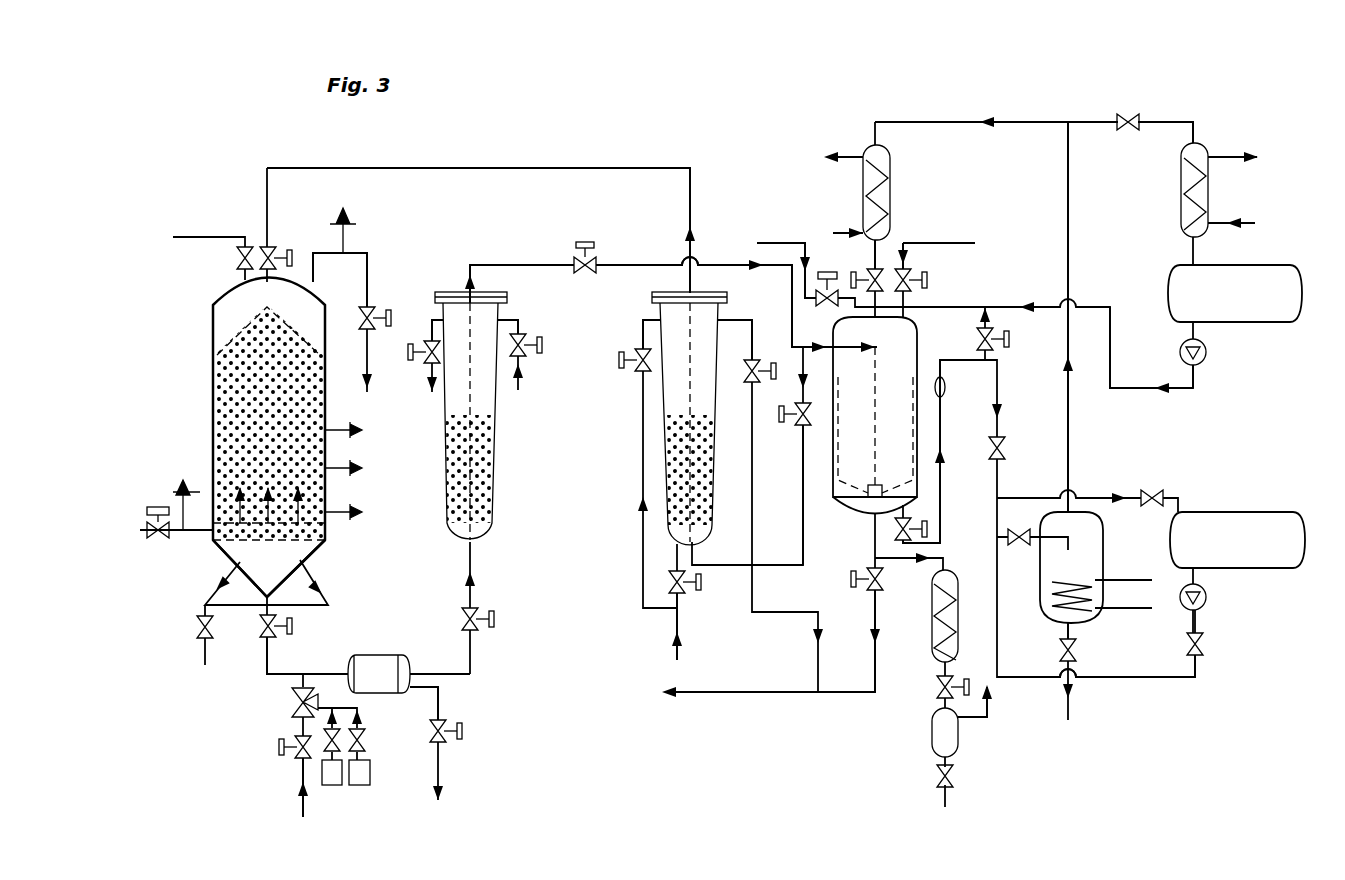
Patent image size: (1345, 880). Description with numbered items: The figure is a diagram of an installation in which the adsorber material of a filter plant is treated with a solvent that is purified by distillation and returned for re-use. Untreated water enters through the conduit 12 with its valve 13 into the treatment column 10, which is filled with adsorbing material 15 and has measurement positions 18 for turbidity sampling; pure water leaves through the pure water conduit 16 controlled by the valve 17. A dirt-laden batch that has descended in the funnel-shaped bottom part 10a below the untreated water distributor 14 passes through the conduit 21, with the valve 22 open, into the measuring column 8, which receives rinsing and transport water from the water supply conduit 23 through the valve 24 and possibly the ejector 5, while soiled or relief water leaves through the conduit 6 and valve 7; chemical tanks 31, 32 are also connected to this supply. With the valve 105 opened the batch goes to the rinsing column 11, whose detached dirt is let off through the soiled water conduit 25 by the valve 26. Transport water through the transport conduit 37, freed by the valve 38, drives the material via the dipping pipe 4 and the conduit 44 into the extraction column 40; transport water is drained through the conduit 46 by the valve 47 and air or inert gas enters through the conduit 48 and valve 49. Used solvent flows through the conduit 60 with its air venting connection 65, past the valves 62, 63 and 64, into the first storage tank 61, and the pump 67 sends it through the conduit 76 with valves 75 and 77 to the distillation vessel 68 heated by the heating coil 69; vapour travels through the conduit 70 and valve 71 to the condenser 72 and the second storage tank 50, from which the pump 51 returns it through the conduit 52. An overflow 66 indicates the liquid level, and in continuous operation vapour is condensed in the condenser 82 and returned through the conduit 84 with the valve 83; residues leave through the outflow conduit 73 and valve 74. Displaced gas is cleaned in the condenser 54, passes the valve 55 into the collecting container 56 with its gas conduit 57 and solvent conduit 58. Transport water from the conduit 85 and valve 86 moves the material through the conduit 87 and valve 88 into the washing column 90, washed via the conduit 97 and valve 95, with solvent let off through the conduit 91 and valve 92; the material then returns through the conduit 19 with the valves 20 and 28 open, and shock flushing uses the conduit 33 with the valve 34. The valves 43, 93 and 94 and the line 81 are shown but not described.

The dipping pipe 4 is at (468, 385).
The ejector 5 is at (300, 705).
The conduit 6 is at (462, 731).
The valve 7 is at (448, 705).
The intermediate container (measuring column) 8 is at (385, 660).
The treatment column 10 is at (210, 405).
The funnel-shaped bottom part 10a is at (298, 548).
The rinsing column 11 is at (502, 436).
The conduit 12 is at (205, 532).
The valve 13 is at (158, 505).
The untreated water distributor 14 is at (290, 540).
The adsorbing material 15 is at (215, 355).
The pure water conduit 16 is at (355, 253).
The valve 17 is at (372, 310).
The measurement positions (valves) 18 is at (363, 428).
The conduit 19 is at (462, 168).
The valve 20 is at (272, 250).
The conduit 21 is at (330, 674).
The valve 22 is at (272, 637).
The water supply conduit 23 is at (300, 808).
The valve 24 is at (277, 750).
The soiled water conduit 25 is at (430, 322).
The valve 26 is at (418, 358).
The valve 28 is at (207, 638).
The chemical tank 31 is at (333, 785).
The chemical tank 32 is at (360, 785).
The conduit 33 is at (207, 237).
The valve 34 is at (238, 258).
The transport conduit 37 is at (503, 322).
The valve 38 is at (543, 340).
The extraction column 40 is at (853, 522).
The control valve 43 is at (590, 247).
The conduit 44 is at (505, 265).
The conduit 46 is at (877, 665).
The valve 47 is at (848, 580).
The conduit 48 is at (935, 243).
The valve 49 is at (913, 275).
The second storage tank 50 is at (1240, 312).
The pump 51 is at (1206, 360).
The conduit 52 is at (1070, 362).
The condenser 54 is at (940, 600).
The valve 55 is at (936, 690).
The collecting container 56 is at (960, 740).
The conduit 57 is at (988, 717).
The conduit 58 is at (956, 772).
The conduit 60 is at (942, 500).
The first storage tank 61 is at (1226, 525).
The valve 62 is at (895, 530).
The valve 63 is at (1004, 448).
The valve 64 is at (1160, 493).
The air venting connection 65 is at (1010, 338).
The overflow 66 is at (946, 387).
The pump 67 is at (1207, 598).
The distillation vessel 68 is at (1103, 552).
The heating coil 69 is at (1132, 585).
The conduit 70 is at (1071, 438).
The valve 71 is at (1138, 122).
The condenser 72 is at (1210, 185).
The outflow conduit 73 is at (1072, 630).
The valve 74 is at (1077, 652).
The valve 75 is at (1205, 645).
The conduit 76 is at (1115, 678).
The valve 77 is at (1019, 545).
The line 81 is at (925, 122).
The condenser 82 is at (893, 190).
The valve 83 is at (872, 262).
The conduit 84 is at (881, 270).
The conduit 85 is at (770, 243).
The valve 86 is at (822, 272).
The conduit 87 is at (803, 480).
The valve 88 is at (784, 414).
The washing column 90 is at (713, 396).
The conduit 91 is at (752, 334).
The valve 92 is at (757, 363).
The line 93 is at (641, 322).
The valve 94 is at (616, 360).
The valve 95 is at (682, 600).
The conduit 97 is at (682, 640).
The valve 105 is at (498, 615).